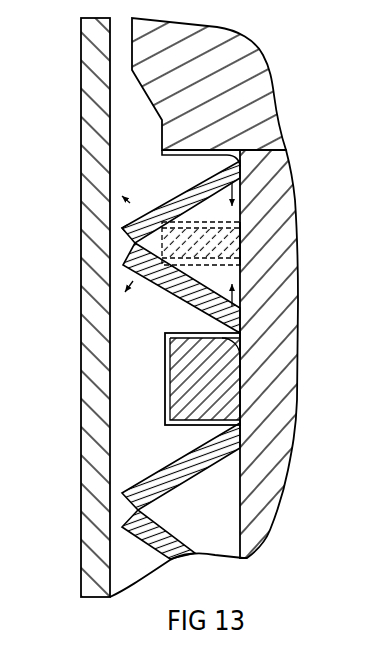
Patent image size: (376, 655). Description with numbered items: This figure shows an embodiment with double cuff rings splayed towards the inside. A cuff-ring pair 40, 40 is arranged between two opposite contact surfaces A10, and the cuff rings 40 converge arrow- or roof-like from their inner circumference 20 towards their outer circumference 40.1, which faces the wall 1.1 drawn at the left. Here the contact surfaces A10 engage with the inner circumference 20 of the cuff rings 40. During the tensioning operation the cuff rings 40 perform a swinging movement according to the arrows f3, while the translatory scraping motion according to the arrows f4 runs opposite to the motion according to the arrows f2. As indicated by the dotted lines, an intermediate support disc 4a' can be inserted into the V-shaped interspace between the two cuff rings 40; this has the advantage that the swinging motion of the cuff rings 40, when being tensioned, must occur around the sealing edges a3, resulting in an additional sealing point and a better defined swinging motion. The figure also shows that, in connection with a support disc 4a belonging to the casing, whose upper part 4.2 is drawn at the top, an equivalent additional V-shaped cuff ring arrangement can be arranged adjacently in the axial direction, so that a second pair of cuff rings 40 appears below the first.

The cylinder wall 1.1 is at (80, 540).
The piston upper flange 4.2 is at (246, 55).
The support disc 4a is at (245, 354).
The intermediate support disc 4a' is at (282, 251).
The contact surface A10 is at (206, 344).
The inner circumference 20 is at (237, 324).
The cuff ring 40 is at (206, 199).
The outer circumference 40.1 is at (121, 228).
The sealing edge a3 is at (162, 243).
The arrow f2 is at (254, 246).
The arrow f3 is at (130, 203).
The arrow f4 is at (232, 185).